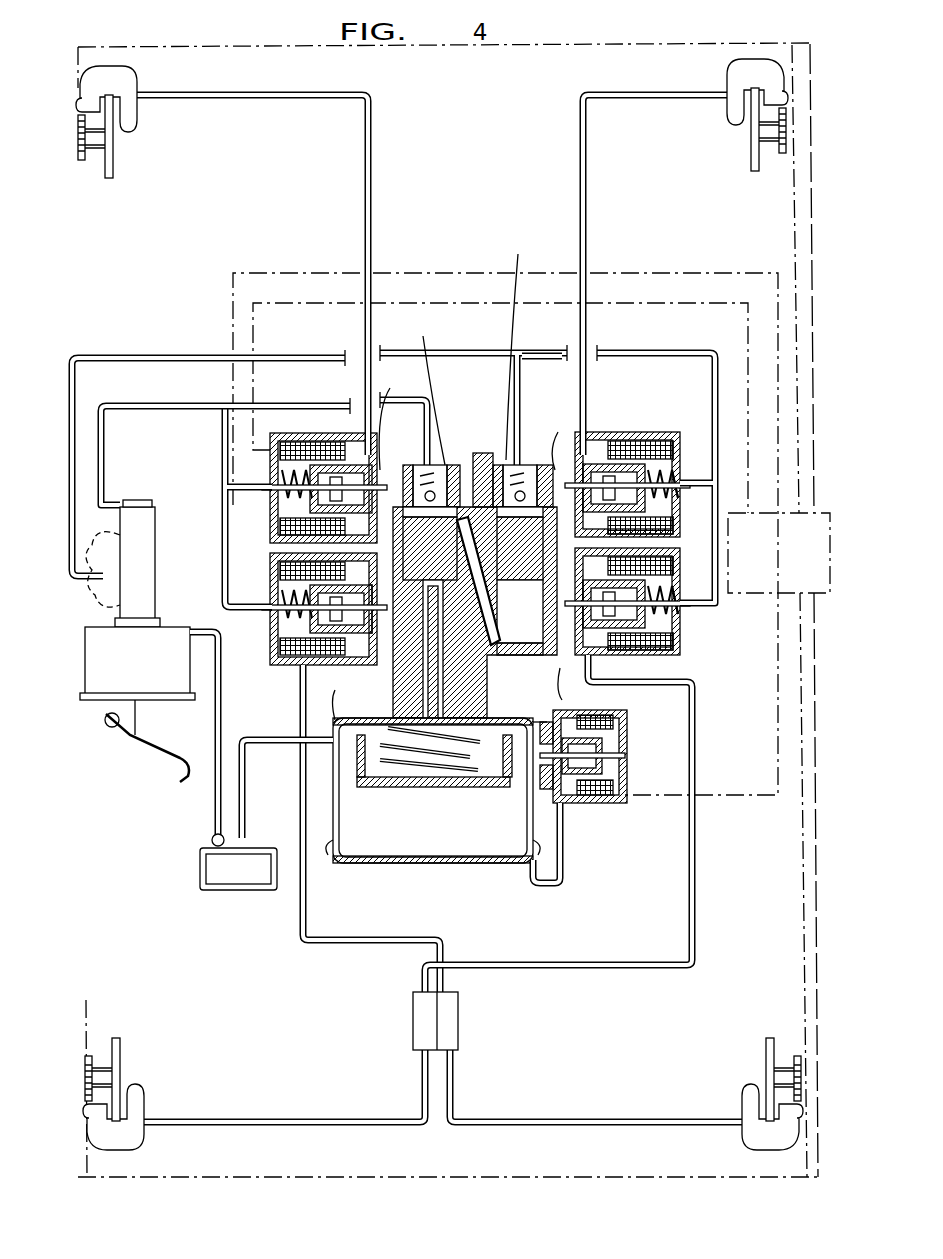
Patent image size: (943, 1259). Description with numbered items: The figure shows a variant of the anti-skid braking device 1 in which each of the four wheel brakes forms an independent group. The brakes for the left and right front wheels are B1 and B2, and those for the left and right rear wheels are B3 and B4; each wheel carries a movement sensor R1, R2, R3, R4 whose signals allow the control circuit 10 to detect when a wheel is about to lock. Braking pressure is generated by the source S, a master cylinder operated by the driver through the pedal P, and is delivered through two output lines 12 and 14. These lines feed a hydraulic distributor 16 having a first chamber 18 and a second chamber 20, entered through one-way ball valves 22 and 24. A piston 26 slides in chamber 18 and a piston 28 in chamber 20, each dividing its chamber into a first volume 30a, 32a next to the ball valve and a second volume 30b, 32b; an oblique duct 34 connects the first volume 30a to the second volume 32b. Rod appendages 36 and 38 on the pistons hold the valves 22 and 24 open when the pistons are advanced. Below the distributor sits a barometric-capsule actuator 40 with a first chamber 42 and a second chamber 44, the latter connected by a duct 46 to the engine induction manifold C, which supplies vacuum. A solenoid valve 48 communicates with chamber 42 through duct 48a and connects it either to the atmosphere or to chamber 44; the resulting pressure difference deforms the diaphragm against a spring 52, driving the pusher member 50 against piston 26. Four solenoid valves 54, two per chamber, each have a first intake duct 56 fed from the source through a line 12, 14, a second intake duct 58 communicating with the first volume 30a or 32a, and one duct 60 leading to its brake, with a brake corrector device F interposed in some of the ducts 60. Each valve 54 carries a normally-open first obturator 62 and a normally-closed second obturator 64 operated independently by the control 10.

The device 1 is at (467, 240).
The control circuit 10 is at (745, 593).
The output line 12 is at (107, 440).
The output line 14 is at (85, 358).
The hydraulic distributor 16 is at (482, 460).
The first chamber 18 is at (444, 828).
The second chamber 20 is at (548, 712).
The one-way ball valve 22 is at (413, 449).
The one-way ball valve 24 is at (519, 343).
The piston 26 is at (395, 562).
The piston 28 is at (535, 442).
The first volume 30a is at (483, 466).
The second volume 30b is at (440, 850).
The first volume 32a is at (531, 634).
The second volume 32b is at (515, 665).
The duct 34 is at (471, 678).
The rod appendage 36 is at (425, 387).
The rod appendage 38 is at (542, 368).
The barometric-capsule actuator 40 is at (378, 938).
The first chamber 42 is at (450, 860).
The second chamber 44 is at (340, 745).
The duct 46 is at (258, 750).
The solenoid valve 48 is at (634, 730).
The duct 48a is at (562, 880).
The pusher member 50 is at (440, 790).
The spring 52 is at (392, 760).
The solenoid valve 54 is at (466, 509).
The first intake duct 56 is at (700, 482).
The second intake duct 58 is at (444, 541).
The duct 60 is at (368, 330).
The first obturator 62 is at (290, 488).
The second obturator 64 is at (360, 450).
The brake unit B1 is at (112, 80).
The brake unit B2 is at (748, 70).
The brake unit B3 is at (118, 1135).
The brake unit B4 is at (760, 1135).
The movement sensor R1 is at (82, 160).
The movement sensor R2 is at (782, 155).
The movement sensor R3 is at (85, 1063).
The movement sensor R4 is at (797, 1055).
The fluid pressure source S is at (140, 520).
The pedal P is at (118, 740).
The induction manifold C is at (215, 874).
The brake corrector device F is at (420, 1025).